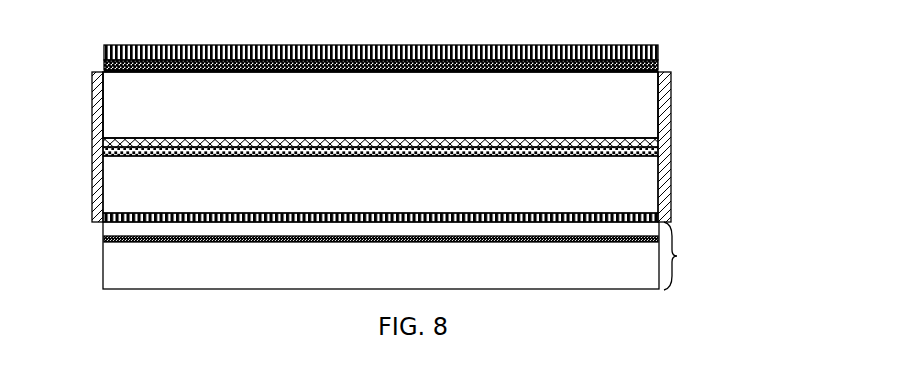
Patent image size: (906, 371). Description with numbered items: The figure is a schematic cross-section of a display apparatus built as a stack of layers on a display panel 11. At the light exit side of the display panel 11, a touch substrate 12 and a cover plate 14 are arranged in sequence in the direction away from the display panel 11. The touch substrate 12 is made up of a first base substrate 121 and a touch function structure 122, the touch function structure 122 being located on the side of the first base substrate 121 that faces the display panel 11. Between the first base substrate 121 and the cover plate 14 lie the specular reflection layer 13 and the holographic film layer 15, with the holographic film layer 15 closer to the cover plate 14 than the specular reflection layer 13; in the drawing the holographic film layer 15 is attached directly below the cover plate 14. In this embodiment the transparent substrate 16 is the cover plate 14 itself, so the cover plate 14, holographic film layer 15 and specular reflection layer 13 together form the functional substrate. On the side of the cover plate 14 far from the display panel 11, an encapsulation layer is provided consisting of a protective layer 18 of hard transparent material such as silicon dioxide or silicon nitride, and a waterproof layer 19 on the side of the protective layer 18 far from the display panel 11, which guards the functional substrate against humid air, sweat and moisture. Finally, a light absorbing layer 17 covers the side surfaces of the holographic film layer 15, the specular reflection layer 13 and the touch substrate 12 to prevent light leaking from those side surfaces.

The display panel 11 is at (408, 256).
The touch substrate 12 is at (431, 189).
The first base substrate 121 is at (638, 182).
The touch function structure 122 is at (638, 215).
The specular reflection layer 13 is at (636, 152).
The cover plate 14 is at (638, 92).
The holographic film layer 15 is at (638, 141).
The transparent substrate 16 is at (437, 105).
The light absorbing layer 17 is at (676, 107).
The protective layer 18 is at (670, 63).
The waterproof layer 19 is at (670, 47).